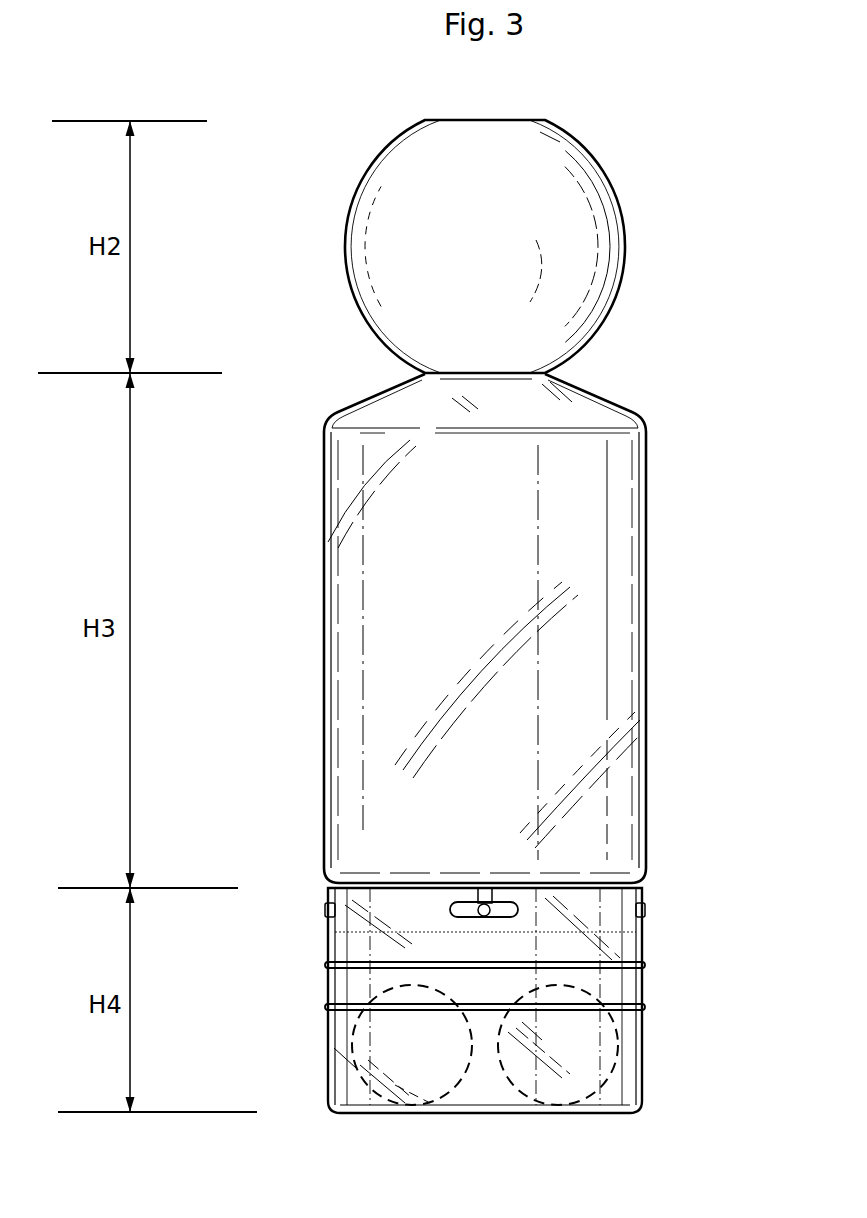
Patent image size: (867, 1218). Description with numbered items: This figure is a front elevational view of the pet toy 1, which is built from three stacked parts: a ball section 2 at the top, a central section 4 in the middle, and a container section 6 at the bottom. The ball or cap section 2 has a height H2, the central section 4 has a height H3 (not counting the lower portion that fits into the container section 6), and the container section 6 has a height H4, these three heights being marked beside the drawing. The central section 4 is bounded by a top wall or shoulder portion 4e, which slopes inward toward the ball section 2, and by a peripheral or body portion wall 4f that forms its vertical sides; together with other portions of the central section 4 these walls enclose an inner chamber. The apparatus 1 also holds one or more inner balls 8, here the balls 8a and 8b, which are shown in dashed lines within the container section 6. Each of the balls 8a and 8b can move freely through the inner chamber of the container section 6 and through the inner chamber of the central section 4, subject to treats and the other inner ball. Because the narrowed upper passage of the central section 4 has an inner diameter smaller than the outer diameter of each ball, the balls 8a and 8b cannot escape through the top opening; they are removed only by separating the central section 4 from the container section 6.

The pet toy 1 is at (616, 147).
The ball section 2 is at (327, 222).
The central section 4 is at (315, 603).
The top wall or shoulder portion 4e is at (417, 400).
The peripheral or body portion wall 4f is at (347, 702).
The container section 6 is at (320, 1027).
The inner balls 8 is at (390, 1053).
The inner ball 8a is at (415, 1072).
The inner ball 8b is at (577, 1048).